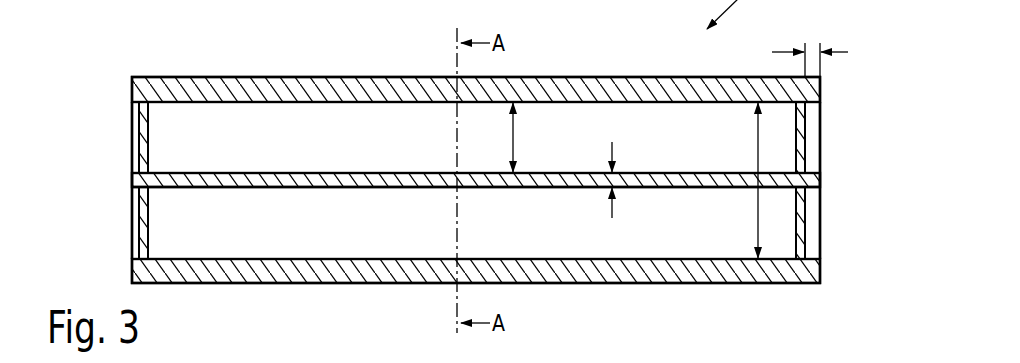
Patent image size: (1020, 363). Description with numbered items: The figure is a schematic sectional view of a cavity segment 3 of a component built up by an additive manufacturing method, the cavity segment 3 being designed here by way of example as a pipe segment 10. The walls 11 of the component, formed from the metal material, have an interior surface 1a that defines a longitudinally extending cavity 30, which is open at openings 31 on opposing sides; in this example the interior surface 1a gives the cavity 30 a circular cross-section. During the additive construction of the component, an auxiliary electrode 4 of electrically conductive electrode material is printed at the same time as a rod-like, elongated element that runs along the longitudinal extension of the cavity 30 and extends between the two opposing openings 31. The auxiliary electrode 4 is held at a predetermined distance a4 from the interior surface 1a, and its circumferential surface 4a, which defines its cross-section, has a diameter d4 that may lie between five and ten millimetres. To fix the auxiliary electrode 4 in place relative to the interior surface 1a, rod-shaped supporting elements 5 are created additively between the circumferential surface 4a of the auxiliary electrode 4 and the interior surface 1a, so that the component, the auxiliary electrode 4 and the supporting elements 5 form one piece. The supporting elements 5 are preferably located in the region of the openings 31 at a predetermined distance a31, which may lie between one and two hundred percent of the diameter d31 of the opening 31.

The interior surface 1a is at (234, 107).
The cavity segment 3 is at (605, 77).
The pipe segment 10 is at (476, 150).
The cavity 30 is at (340, 137).
The auxiliary electrode 4 is at (256, 179).
The circumferential surface 4a is at (321, 189).
The supporting elements 5 is at (140, 132).
The openings 31 is at (135, 258).
The walls 11 is at (645, 272).
The predetermined distance a4 is at (526, 137).
The diameter of the auxiliary electrode d4 is at (613, 153).
The diameter of the opening d31 is at (757, 150).
The predetermined distance a31 is at (838, 50).